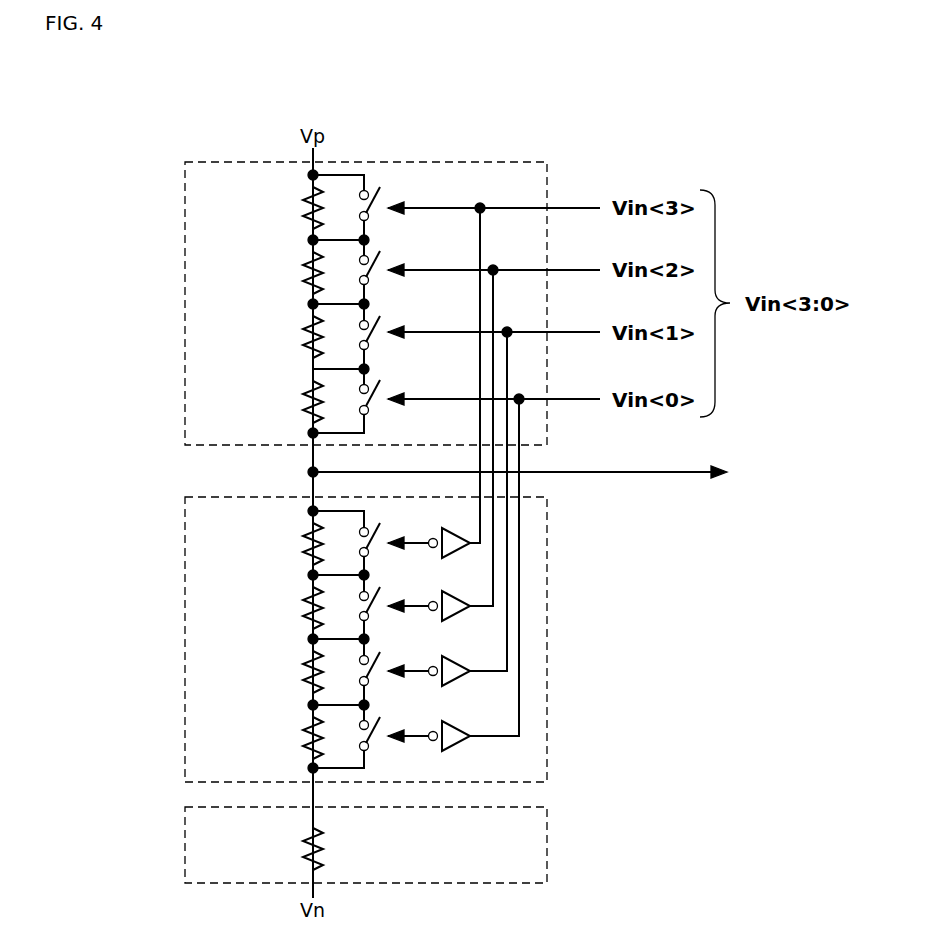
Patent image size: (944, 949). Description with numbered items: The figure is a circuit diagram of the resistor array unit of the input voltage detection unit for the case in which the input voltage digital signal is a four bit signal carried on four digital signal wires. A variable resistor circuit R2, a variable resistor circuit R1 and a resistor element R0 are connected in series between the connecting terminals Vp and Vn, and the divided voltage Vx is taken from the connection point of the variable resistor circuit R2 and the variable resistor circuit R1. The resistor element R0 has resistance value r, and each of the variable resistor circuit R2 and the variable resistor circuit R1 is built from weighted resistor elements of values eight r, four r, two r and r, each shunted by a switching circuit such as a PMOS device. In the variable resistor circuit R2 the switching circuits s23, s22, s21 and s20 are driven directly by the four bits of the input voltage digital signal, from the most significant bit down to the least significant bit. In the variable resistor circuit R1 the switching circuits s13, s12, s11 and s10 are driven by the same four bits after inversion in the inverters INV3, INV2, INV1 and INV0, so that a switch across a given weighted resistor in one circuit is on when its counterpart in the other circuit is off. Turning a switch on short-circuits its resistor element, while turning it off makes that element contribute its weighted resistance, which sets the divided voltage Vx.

The variable resistor circuit R2 is at (184, 312).
The variable resistor circuit R1 is at (184, 678).
The resistor element R0 is at (184, 843).
The switching circuit s23 is at (456, 208).
The switching circuit s22 is at (456, 273).
The switching circuit s21 is at (456, 337).
The switching circuit s20 is at (456, 402).
The switching circuit s13 is at (370, 544).
The switching circuit s12 is at (370, 608).
The switching circuit s11 is at (370, 672).
The switching circuit s10 is at (370, 738).
The inverter INV3 is at (455, 557).
The inverter INV2 is at (455, 620).
The inverter INV1 is at (455, 684).
The inverter INV0 is at (455, 749).
The divided voltage Vx is at (538, 473).